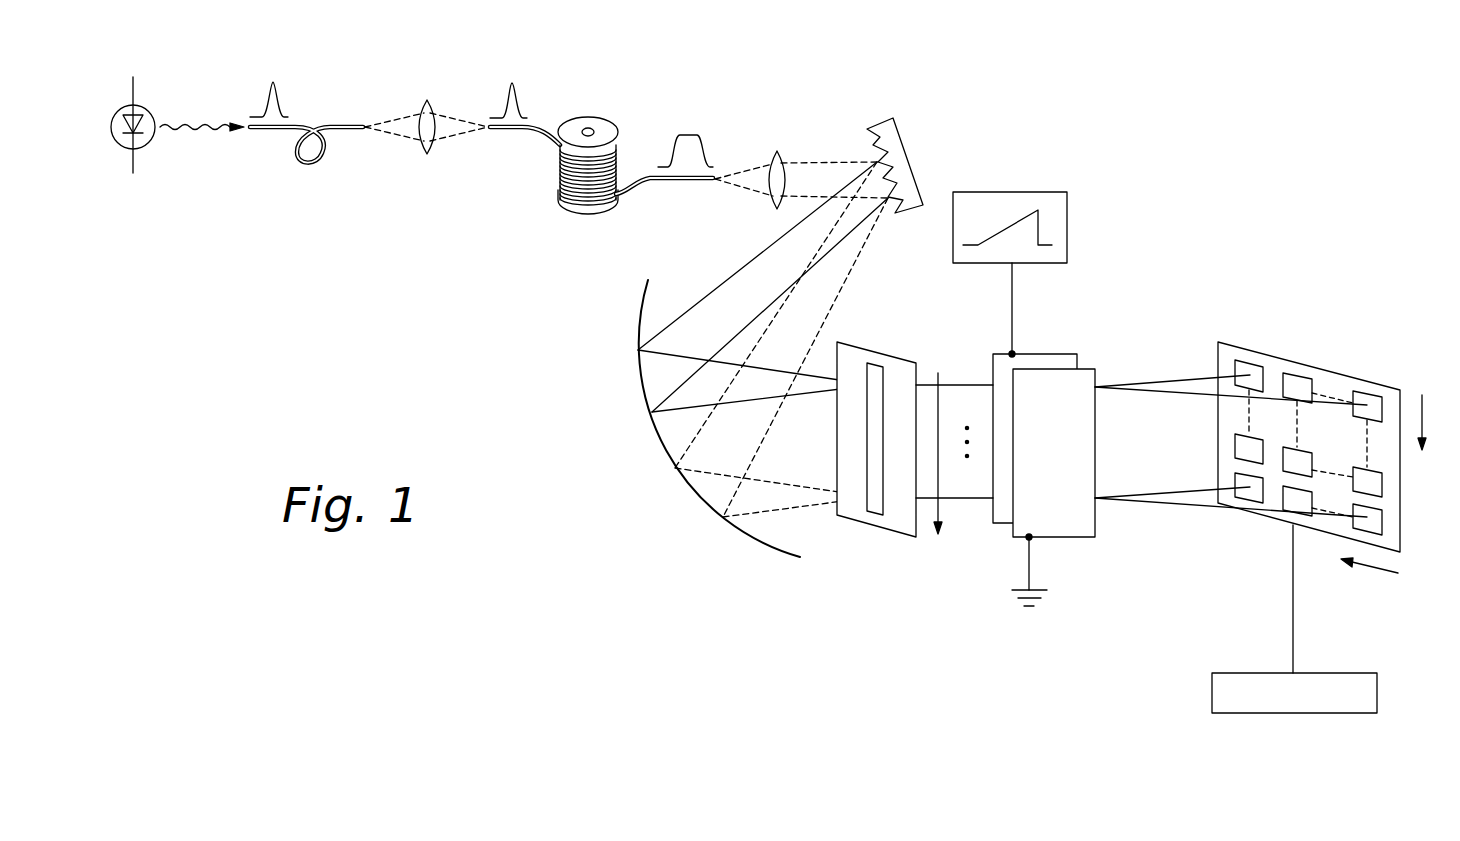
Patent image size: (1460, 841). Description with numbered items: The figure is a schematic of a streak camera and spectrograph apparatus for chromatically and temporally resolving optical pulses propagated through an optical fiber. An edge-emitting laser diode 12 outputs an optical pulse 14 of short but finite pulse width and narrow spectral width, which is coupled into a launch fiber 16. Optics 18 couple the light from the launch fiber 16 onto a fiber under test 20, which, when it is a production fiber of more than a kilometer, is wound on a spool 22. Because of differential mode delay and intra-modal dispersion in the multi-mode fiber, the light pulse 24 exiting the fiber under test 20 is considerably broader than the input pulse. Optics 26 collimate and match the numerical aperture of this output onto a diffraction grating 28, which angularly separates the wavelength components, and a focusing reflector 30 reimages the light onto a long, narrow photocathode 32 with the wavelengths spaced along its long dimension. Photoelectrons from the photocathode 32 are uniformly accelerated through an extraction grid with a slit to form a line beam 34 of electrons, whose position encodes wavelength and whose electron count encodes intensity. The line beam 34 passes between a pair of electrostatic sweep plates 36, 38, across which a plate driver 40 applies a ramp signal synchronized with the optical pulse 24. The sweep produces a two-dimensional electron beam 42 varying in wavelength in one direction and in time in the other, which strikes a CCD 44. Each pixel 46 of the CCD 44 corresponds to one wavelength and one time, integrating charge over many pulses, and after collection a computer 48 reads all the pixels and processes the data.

The laser diode 12 is at (143, 107).
The optical pulse 14 is at (273, 80).
The launch fiber 16 is at (308, 167).
The optics 18 is at (425, 102).
The fiber under test 20 is at (507, 131).
The spool 22 is at (588, 117).
The light pulse 24 is at (679, 134).
The optics 26 is at (779, 153).
The diffraction grating 28 is at (898, 133).
The focusing reflector 30 is at (637, 322).
The photocathode 32 is at (873, 513).
The line beam 34 is at (960, 491).
The sweep plate 36 is at (1052, 354).
The sweep plate 38 is at (1067, 538).
The plate driver 40 is at (1067, 228).
The two-dimensional electron beam 42 is at (1163, 497).
The CCD 44 is at (1330, 370).
The pixel 46 is at (1250, 360).
The computer 48 is at (1280, 714).